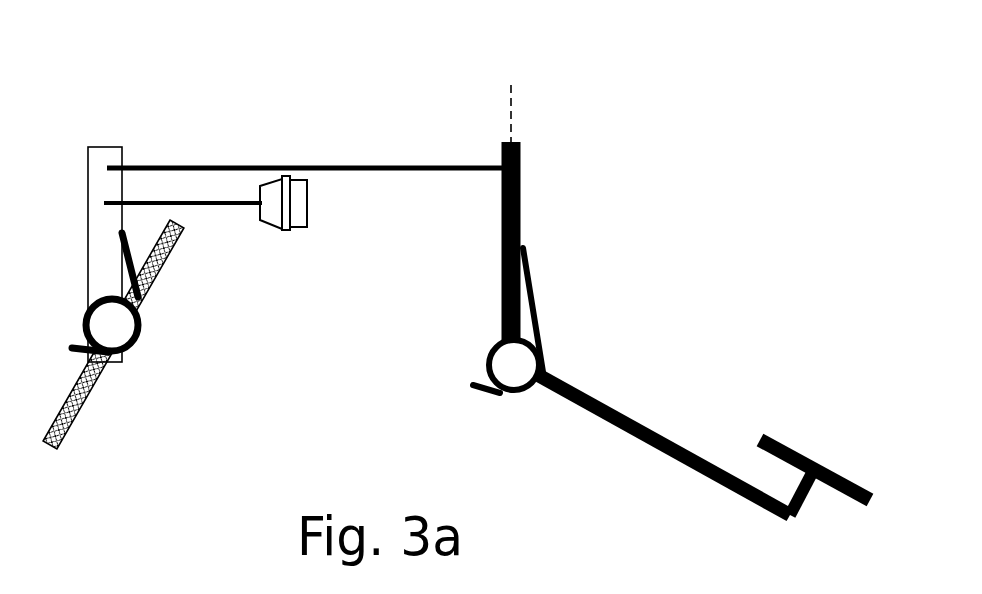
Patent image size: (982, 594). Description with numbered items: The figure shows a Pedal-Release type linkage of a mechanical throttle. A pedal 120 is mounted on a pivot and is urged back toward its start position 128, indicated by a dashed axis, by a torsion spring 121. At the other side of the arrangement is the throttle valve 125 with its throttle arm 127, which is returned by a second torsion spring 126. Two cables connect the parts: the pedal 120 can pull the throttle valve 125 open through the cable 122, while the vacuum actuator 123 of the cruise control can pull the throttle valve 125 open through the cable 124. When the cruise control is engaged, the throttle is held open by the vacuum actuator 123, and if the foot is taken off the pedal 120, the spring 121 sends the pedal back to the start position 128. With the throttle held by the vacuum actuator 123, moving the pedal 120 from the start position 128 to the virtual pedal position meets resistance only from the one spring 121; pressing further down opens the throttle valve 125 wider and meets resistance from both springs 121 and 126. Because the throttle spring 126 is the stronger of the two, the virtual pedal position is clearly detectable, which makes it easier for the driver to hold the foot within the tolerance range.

The pedal 120 is at (585, 417).
The torsion spring 121 is at (540, 318).
The cable 122 is at (277, 167).
The vacuum actuator 123 is at (310, 200).
The cable 124 is at (210, 207).
The throttle valve 125 is at (92, 383).
The torsion spring 126 is at (142, 318).
The throttle arm 127 is at (108, 152).
The start position 128 is at (517, 112).